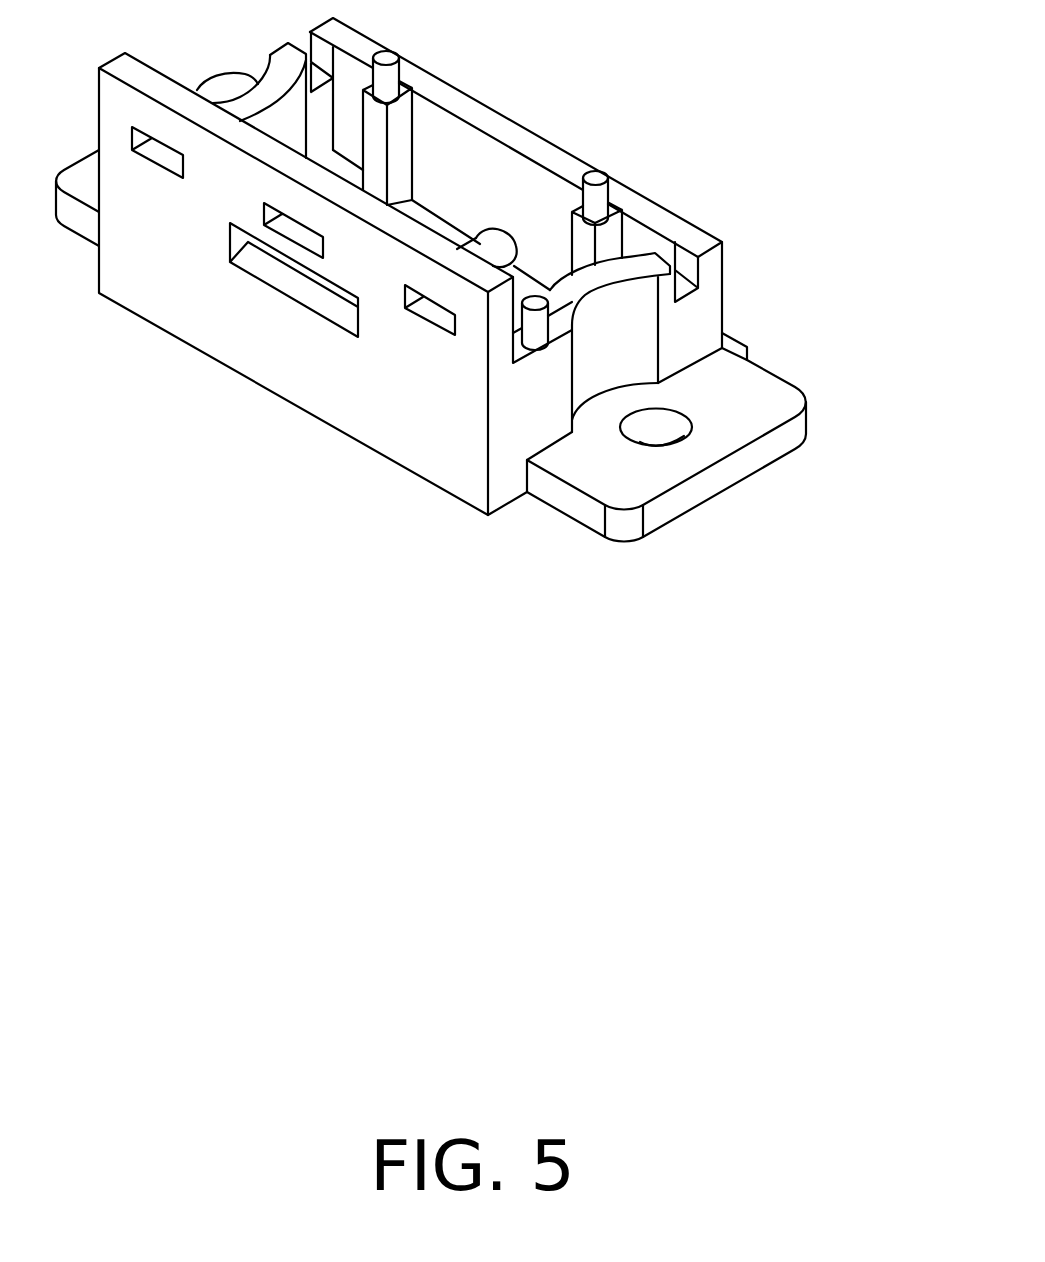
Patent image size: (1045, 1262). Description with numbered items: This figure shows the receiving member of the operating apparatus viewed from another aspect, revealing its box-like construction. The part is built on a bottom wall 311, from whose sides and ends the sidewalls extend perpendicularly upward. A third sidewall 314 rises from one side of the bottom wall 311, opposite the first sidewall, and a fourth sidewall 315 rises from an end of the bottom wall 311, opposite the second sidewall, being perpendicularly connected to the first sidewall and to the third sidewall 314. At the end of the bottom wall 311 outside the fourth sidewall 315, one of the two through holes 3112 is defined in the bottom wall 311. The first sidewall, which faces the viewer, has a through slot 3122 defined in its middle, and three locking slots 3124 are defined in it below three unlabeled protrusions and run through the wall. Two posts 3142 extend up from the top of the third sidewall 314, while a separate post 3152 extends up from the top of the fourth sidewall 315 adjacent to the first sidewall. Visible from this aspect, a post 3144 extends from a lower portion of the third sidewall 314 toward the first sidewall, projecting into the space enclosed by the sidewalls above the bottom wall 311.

The bottom wall 311 is at (766, 410).
The through holes 3112 is at (676, 435).
The through slot 3122 is at (282, 277).
The locking slots 3124 is at (442, 316).
The third sidewall 314 is at (446, 95).
The posts 3142 is at (597, 183).
The post 3144 is at (497, 240).
The fourth sidewall 315 is at (693, 324).
The post 3152 is at (688, 271).